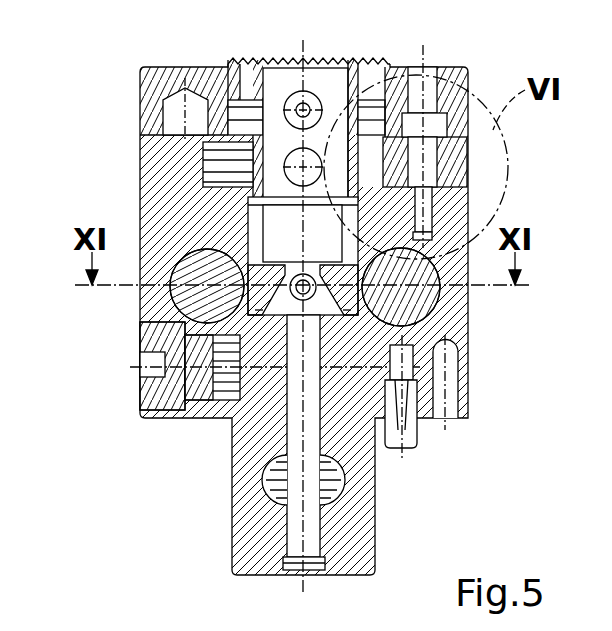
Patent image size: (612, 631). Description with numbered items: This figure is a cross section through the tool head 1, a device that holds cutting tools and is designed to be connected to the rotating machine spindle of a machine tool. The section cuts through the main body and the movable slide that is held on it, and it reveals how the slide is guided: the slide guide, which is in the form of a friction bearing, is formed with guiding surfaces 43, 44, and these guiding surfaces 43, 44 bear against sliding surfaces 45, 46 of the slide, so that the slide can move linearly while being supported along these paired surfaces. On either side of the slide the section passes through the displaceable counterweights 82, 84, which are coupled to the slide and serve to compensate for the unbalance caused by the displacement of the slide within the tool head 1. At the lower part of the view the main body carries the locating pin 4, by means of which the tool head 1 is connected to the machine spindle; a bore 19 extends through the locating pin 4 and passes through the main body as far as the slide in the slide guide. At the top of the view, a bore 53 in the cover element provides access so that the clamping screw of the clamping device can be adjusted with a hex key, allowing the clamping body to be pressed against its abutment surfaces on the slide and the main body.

The tool head 1 is at (92, 84).
The locating pin 4 is at (372, 548).
The bore 19 is at (315, 557).
The guiding surface 43 is at (210, 208).
The guiding surface 44 is at (392, 213).
The sliding surface 45 is at (210, 172).
The sliding surface 46 is at (395, 187).
The bore 53 is at (427, 72).
The counterweight 82 is at (187, 302).
The counterweight 84 is at (423, 302).